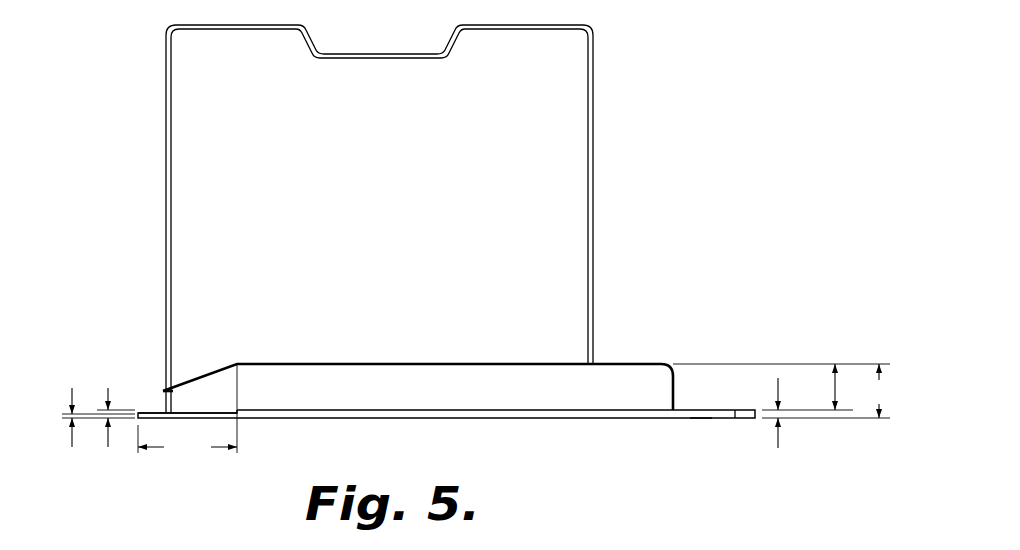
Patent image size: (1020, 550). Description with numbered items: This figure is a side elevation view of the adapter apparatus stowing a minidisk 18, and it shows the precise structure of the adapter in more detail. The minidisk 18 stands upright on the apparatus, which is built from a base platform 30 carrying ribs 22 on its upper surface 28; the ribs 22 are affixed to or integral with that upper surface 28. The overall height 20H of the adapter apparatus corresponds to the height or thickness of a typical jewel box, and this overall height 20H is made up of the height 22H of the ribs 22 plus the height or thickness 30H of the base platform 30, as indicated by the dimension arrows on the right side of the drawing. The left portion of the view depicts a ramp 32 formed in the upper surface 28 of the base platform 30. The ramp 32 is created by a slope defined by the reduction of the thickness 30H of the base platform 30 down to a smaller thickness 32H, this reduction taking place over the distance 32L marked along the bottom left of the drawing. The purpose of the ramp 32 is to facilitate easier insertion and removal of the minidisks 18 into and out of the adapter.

The minidisk 18 is at (368, 223).
The ribs 22 is at (413, 394).
The upper surface 28 is at (712, 410).
The base platform 30 is at (630, 372).
The ramp 32 is at (183, 398).
The overall height 20H is at (878, 391).
The height of the ribs 22H is at (781, 387).
The height of the base platform 30H is at (476, 417).
The smaller thickness 32H is at (70, 430).
The distance 32L is at (187, 410).